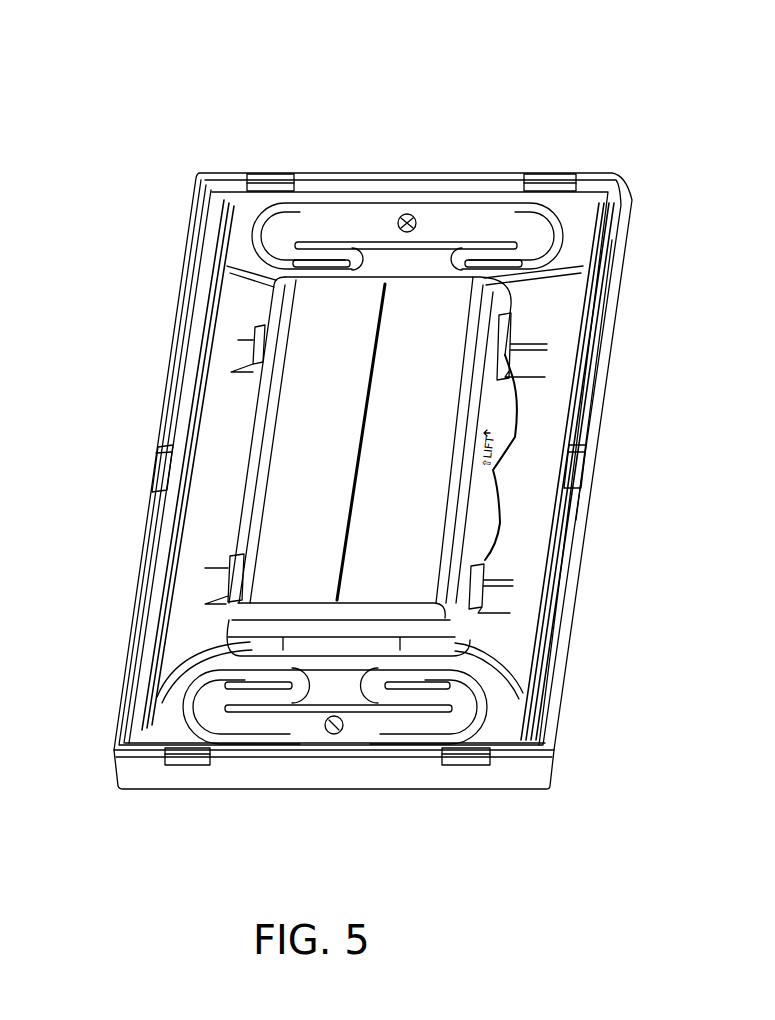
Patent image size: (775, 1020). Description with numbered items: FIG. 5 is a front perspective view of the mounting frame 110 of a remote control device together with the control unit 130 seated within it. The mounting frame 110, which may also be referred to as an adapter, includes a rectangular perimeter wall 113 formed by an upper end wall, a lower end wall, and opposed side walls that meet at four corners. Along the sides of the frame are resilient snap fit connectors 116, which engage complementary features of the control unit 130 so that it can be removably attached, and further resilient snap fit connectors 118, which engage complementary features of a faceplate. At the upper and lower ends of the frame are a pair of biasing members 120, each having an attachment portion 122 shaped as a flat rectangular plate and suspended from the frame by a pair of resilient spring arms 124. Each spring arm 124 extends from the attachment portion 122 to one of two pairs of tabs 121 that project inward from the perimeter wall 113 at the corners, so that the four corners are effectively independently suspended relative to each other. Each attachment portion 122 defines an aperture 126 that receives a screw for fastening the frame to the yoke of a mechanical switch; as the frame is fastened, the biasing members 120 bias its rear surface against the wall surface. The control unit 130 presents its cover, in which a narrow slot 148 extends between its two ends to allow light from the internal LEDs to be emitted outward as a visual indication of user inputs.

The mounting frame 110 is at (198, 185).
The perimeter wall 113 is at (612, 297).
The resilient snap fit connectors 116 is at (262, 340).
The resilient snap fit connectors 118 is at (257, 173).
The biasing members 120 is at (357, 208).
The tabs 121 is at (248, 235).
The attachment portion 122 is at (437, 225).
The resilient spring arms 124 is at (318, 228).
The aperture 126 is at (405, 214).
The control unit 130 is at (315, 397).
The slot 148 is at (343, 512).